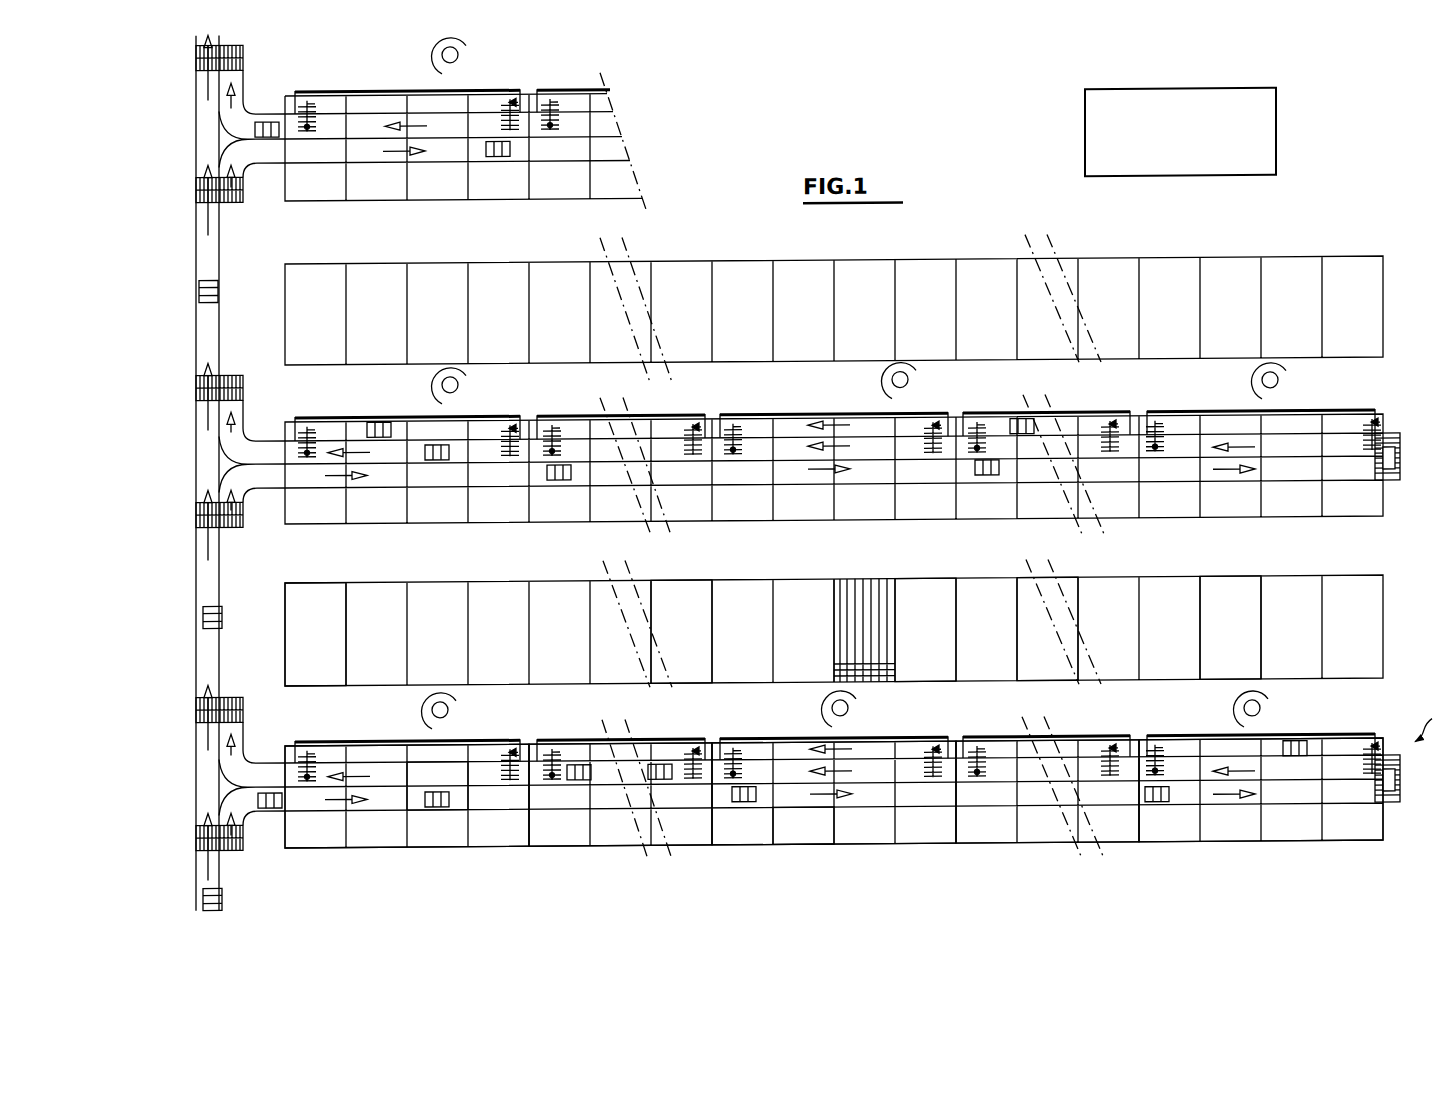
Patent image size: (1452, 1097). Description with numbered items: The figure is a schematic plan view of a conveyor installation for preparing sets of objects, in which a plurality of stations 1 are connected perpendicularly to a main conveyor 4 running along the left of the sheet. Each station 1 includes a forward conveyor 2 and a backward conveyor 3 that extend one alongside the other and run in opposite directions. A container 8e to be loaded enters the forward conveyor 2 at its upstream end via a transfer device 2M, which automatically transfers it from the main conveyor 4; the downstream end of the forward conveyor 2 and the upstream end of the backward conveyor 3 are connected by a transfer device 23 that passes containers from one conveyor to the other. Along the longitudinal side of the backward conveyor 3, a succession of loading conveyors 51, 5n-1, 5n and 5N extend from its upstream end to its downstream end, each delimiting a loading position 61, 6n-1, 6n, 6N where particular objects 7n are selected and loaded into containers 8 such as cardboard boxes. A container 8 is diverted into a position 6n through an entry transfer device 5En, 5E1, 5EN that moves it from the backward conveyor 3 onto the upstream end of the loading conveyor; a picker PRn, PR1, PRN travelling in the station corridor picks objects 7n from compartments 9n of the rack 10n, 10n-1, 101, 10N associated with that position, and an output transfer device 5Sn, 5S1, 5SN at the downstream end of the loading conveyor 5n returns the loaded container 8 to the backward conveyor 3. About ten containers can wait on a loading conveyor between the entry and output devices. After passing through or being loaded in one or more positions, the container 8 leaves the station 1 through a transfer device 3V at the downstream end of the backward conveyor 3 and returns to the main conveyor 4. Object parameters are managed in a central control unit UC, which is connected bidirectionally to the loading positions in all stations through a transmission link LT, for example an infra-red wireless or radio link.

The station 1 is at (665, 137).
The forward conveyor 2 is at (984, 800).
The transfer device 2M is at (236, 853).
The backward conveyor 3 is at (460, 782).
The transfer device 3V is at (231, 708).
The main conveyor 4 is at (200, 658).
The container 8 is at (222, 617).
The container 8e is at (270, 812).
The transfer device 23 is at (1400, 794).
The loading conveyor 5N is at (339, 750).
The output transfer device 5SN is at (298, 755).
The entry transfer device 5EN is at (512, 752).
The picker PRN is at (462, 706).
The rack 10N is at (424, 606).
The loading position 6N is at (402, 860).
The compartments 9n is at (834, 610).
The objects 7n is at (878, 666).
The rack 10n is at (916, 592).
The output transfer device 5Sn is at (727, 752).
The picker PRn is at (866, 708).
The loading conveyor 5n is at (860, 755).
The entry transfer device 5En is at (963, 752).
The loading position 6n is at (897, 860).
The loading conveyor 5n-1 is at (1006, 752).
The rack 10n-1 is at (989, 594).
The loading position 6n-1 is at (1042, 860).
The output transfer device 5S1 is at (1155, 754).
The picker PR1 is at (1268, 712).
The loading conveyor 51 is at (1339, 754).
The entry transfer device 5E1 is at (1379, 756).
The loading position 61 is at (1300, 860).
The rack 101 is at (1230, 590).
The link LT is at (1068, 184).
The central control unit UC is at (1278, 138).